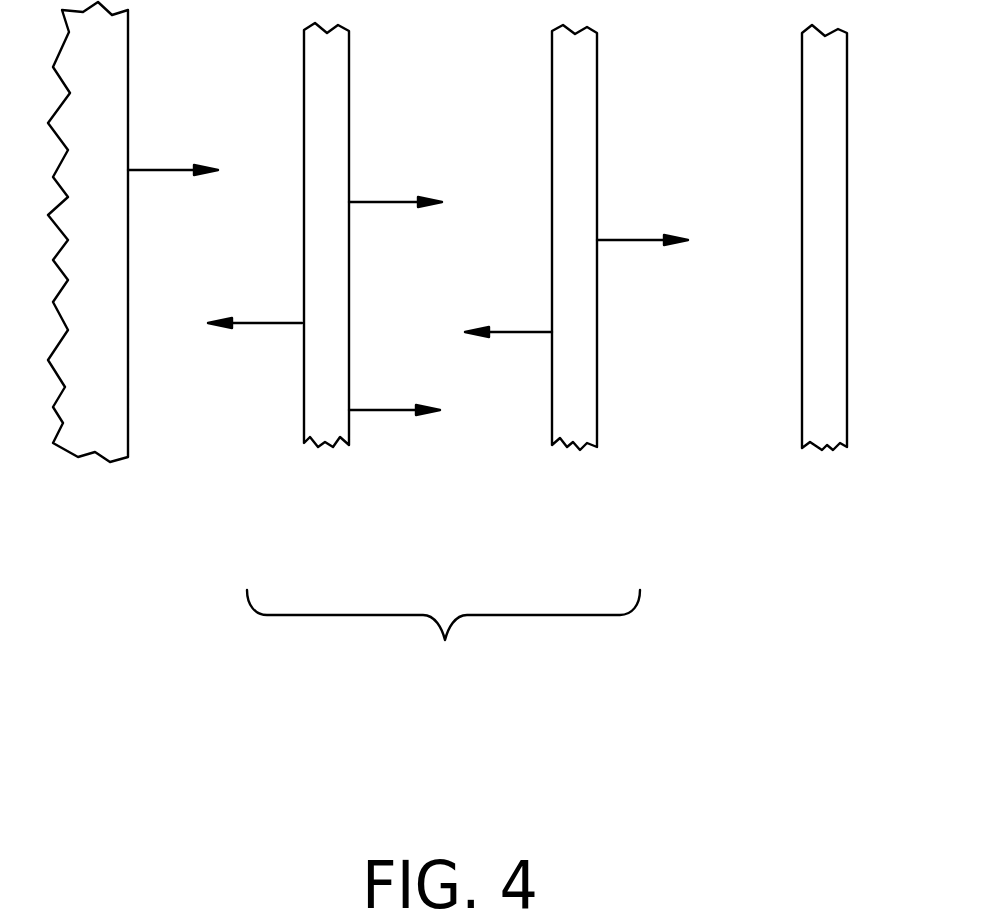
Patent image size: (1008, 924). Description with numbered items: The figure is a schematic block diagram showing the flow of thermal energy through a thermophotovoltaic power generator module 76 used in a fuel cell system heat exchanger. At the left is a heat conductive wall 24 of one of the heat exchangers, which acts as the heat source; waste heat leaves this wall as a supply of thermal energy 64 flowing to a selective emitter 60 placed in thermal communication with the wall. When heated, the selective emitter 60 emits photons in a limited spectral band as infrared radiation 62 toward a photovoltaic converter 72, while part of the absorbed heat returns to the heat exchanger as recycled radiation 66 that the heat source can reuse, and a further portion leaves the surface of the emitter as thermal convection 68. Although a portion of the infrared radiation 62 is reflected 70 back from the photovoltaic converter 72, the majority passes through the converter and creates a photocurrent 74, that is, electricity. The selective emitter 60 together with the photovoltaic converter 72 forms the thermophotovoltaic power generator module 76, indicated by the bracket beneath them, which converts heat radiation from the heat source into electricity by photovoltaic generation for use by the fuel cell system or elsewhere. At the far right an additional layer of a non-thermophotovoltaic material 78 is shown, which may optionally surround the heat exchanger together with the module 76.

The heat conductive wall 24 is at (118, 78).
The selective emitter 60 is at (325, 442).
The infrared radiation 62 is at (377, 202).
The thermal energy 64 is at (158, 170).
The recycled radiation 66 is at (265, 323).
The thermal convection 68 is at (377, 410).
The reflected radiation 70 is at (528, 332).
The photovoltaic converter 72 is at (573, 447).
The photocurrent 74 is at (627, 240).
The thermophotovoltaic power generator module 76 is at (443, 641).
The non-thermophotovoltaic material 78 is at (822, 450).